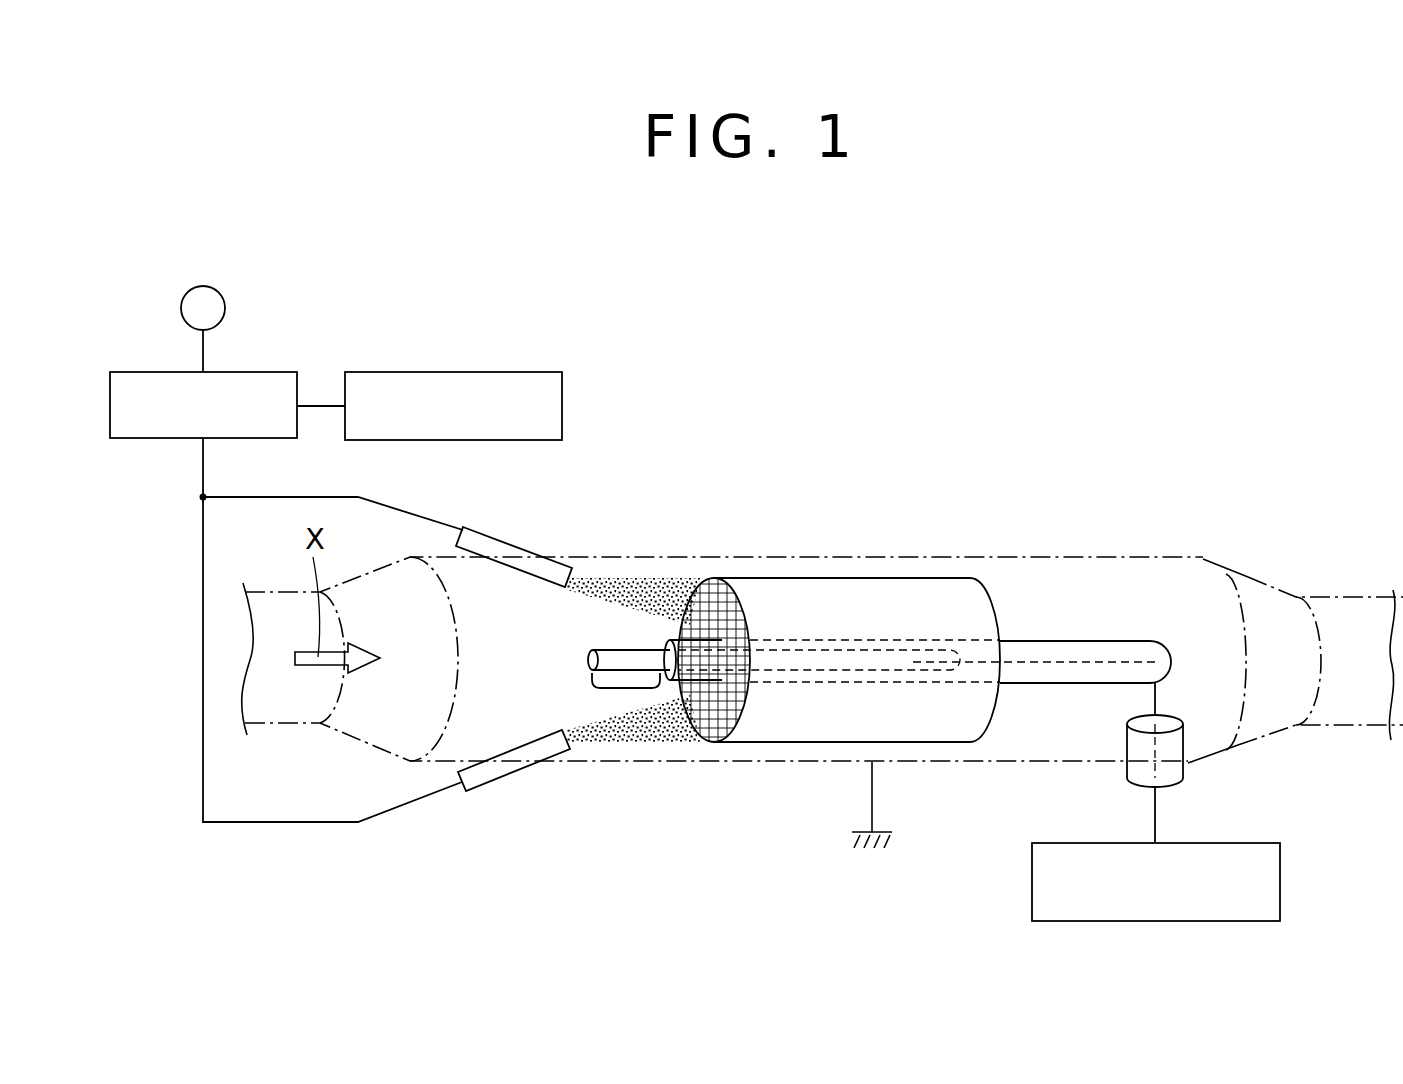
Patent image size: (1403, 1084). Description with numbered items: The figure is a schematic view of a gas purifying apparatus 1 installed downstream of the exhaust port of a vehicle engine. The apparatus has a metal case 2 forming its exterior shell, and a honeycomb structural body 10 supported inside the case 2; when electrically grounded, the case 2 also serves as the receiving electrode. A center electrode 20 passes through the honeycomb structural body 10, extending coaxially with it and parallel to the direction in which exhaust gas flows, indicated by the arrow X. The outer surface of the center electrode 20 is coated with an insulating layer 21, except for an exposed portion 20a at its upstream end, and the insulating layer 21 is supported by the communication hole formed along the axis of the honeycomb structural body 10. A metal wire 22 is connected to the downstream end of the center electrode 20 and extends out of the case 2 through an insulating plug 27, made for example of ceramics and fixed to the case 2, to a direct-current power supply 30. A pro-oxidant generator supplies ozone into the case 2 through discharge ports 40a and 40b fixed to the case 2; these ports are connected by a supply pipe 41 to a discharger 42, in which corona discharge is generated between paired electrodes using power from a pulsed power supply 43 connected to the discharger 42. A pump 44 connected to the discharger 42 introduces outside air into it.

The gas purifying apparatus 1 is at (879, 501).
The metal case 2 is at (1083, 560).
The honeycomb structural body 10 is at (753, 593).
The center electrode 20 is at (622, 660).
The exposed portion 20a is at (627, 690).
The insulating layer 21 is at (1034, 641).
The metal wire 22 is at (1155, 707).
The insulating plug 27 is at (1180, 772).
The direct-current power supply 30 is at (1280, 878).
The discharge port 40a is at (485, 533).
The discharge port 40b is at (497, 782).
The supply pipe 41 is at (203, 620).
The discharger 42 is at (247, 372).
The pulsed power supply 43 is at (443, 372).
The pump 44 is at (221, 294).